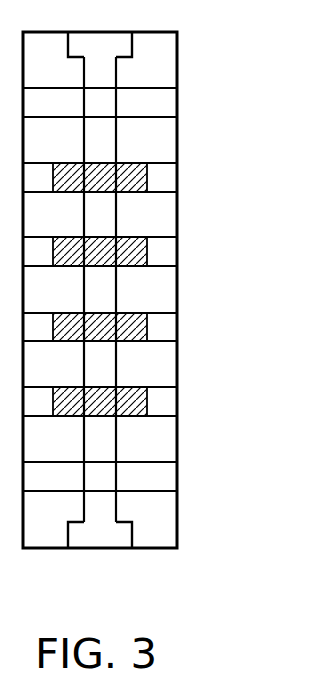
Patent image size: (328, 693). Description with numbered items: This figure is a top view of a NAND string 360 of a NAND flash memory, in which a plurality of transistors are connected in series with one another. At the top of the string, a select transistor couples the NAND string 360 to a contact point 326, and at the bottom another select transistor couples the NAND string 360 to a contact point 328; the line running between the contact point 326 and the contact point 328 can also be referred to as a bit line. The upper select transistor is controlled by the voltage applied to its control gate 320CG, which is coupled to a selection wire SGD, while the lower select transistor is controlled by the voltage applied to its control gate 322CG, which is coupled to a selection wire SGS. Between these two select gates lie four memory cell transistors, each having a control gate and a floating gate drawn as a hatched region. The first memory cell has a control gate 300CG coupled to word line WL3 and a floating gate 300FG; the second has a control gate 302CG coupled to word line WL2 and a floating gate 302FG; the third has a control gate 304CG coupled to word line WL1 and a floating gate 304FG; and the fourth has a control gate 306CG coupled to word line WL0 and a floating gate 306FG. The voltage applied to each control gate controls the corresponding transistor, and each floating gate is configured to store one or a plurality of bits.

The contact point 326 is at (132, 43).
The contact point 328 is at (132, 536).
The control gate 320CG is at (161, 88).
The control gate 322CG is at (161, 462).
The floating gate 300FG is at (140, 163).
The control gate 300CG is at (161, 163).
The floating gate 302FG is at (140, 237).
The control gate 302CG is at (161, 237).
The floating gate 304FG is at (140, 313).
The control gate 304CG is at (161, 313).
The floating gate 306FG is at (140, 387).
The control gate 306CG is at (161, 387).
The NAND string 360 is at (313, 607).